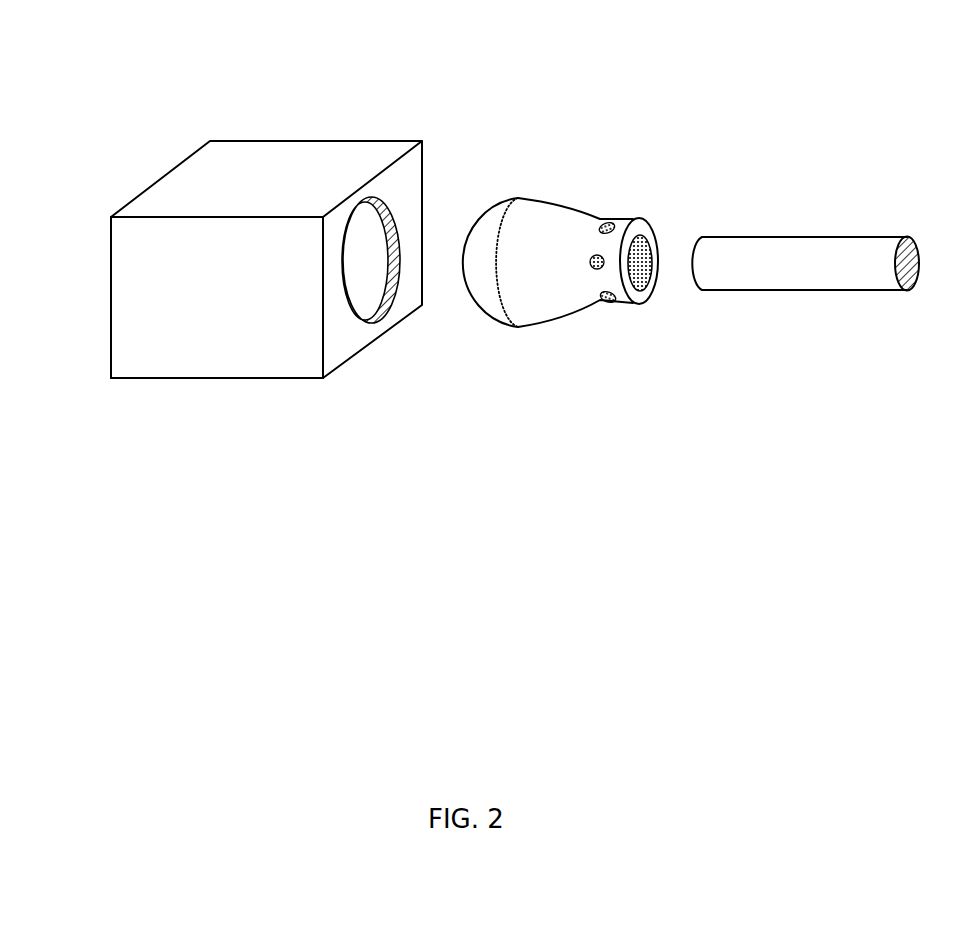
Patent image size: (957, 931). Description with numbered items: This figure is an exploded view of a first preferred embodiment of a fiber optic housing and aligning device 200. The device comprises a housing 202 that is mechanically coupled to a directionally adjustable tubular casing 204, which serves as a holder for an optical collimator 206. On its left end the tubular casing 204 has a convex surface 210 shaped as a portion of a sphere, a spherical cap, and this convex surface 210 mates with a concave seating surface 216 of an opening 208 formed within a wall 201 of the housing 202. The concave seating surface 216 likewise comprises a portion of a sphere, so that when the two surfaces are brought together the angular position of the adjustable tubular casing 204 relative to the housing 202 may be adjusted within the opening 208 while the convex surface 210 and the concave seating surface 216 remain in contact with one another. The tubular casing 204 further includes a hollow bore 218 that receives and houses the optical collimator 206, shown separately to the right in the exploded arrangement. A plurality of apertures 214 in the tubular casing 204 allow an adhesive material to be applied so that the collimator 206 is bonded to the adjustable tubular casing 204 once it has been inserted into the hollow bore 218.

The fiber optic housing and aligning device 200 is at (277, 42).
The wall 201 is at (333, 345).
The housing 202 is at (340, 125).
The directionally adjustable tubular casing 204 is at (578, 177).
The optical collimator 206 is at (847, 235).
The opening 208 is at (376, 262).
The convex surface 210 is at (459, 222).
The apertures 214 is at (608, 220).
The concave seating surface 216 is at (388, 293).
The hollow bore 218 is at (662, 263).